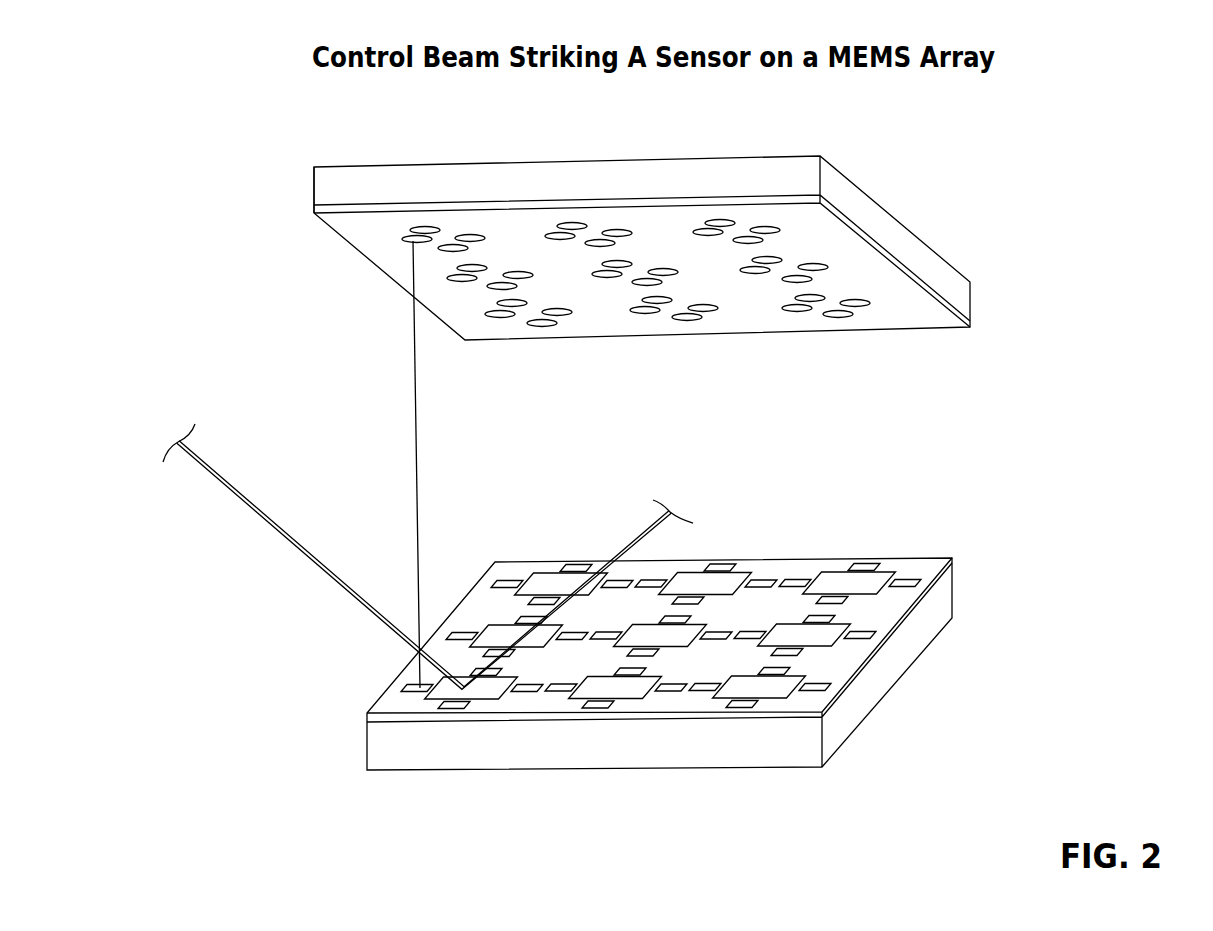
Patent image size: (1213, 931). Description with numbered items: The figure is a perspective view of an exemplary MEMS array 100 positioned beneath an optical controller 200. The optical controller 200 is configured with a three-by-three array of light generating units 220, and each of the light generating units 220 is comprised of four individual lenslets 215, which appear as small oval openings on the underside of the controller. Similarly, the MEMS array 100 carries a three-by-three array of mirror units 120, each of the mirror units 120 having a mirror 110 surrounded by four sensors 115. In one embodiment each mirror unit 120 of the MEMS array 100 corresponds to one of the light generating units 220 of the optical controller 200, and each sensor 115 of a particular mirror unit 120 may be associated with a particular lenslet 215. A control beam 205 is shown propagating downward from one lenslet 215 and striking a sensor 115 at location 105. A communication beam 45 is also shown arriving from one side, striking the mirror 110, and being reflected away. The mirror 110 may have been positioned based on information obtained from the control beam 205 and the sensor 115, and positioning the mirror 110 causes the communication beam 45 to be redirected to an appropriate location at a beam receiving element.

The communication beam 45 is at (310, 563).
The MEMS array 100 is at (943, 602).
The location 105 is at (407, 690).
The mirror 110 is at (488, 692).
The sensors 115 is at (421, 699).
The mirror units 120 is at (942, 542).
The optical controller 200 is at (880, 217).
The control beam 205 is at (415, 377).
The lenslets 215 is at (402, 241).
The light generating units 220 is at (880, 345).